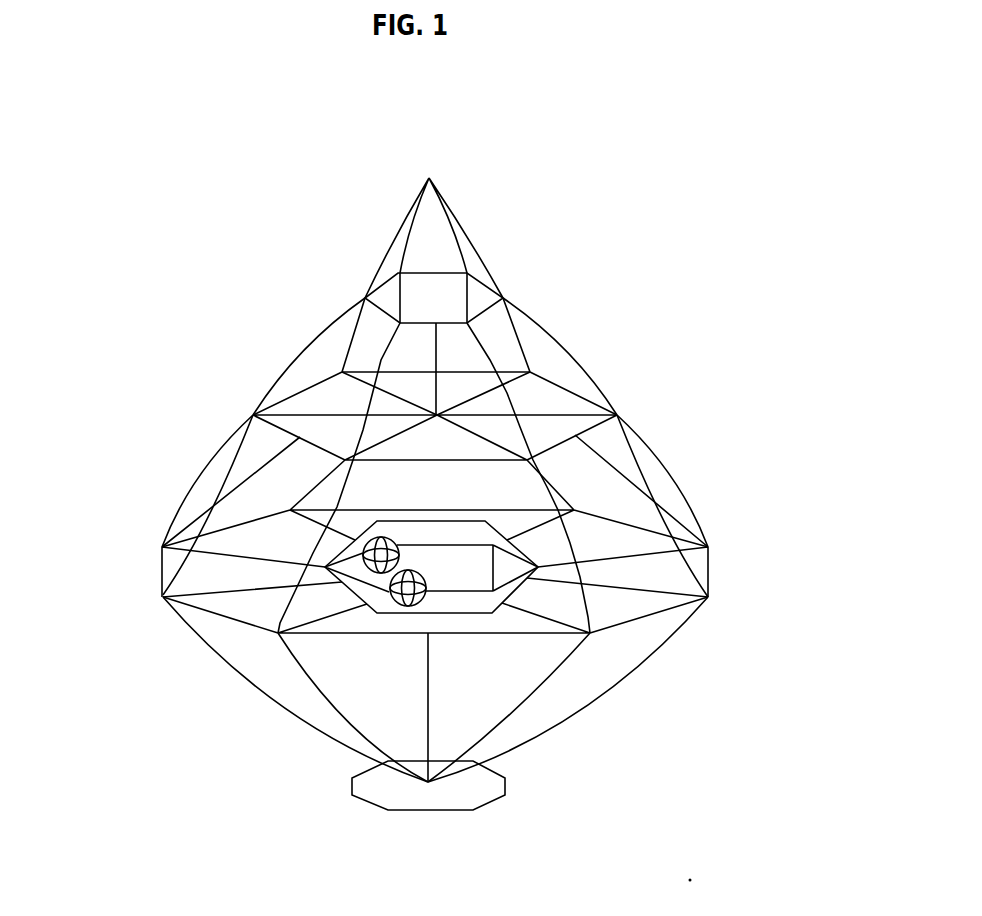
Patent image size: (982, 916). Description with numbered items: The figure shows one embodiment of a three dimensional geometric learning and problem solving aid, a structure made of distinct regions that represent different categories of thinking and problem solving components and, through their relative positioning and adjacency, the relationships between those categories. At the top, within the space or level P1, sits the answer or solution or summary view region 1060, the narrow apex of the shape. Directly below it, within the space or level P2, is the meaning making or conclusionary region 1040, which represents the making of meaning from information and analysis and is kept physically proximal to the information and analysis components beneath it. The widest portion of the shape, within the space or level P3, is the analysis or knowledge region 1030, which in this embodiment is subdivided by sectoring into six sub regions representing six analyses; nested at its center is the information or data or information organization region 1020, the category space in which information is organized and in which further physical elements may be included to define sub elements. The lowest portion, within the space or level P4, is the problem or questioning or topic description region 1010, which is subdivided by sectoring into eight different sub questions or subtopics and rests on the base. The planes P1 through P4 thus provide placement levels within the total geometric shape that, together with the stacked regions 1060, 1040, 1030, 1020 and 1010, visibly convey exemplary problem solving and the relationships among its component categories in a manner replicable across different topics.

The answer or solution or summary view region 1060 is at (507, 297).
The meaning making or conclusionary region 1040 is at (622, 298).
The analysis or knowledge region 1030 is at (720, 422).
The problem or questioning or topic description region 1010 is at (708, 785).
The information or data or information organization region 1020 is at (486, 577).
The space or level P1 is at (330, 250).
The space or level P2 is at (388, 356).
The space or level P3 is at (438, 478).
The space or level P4 is at (419, 703).